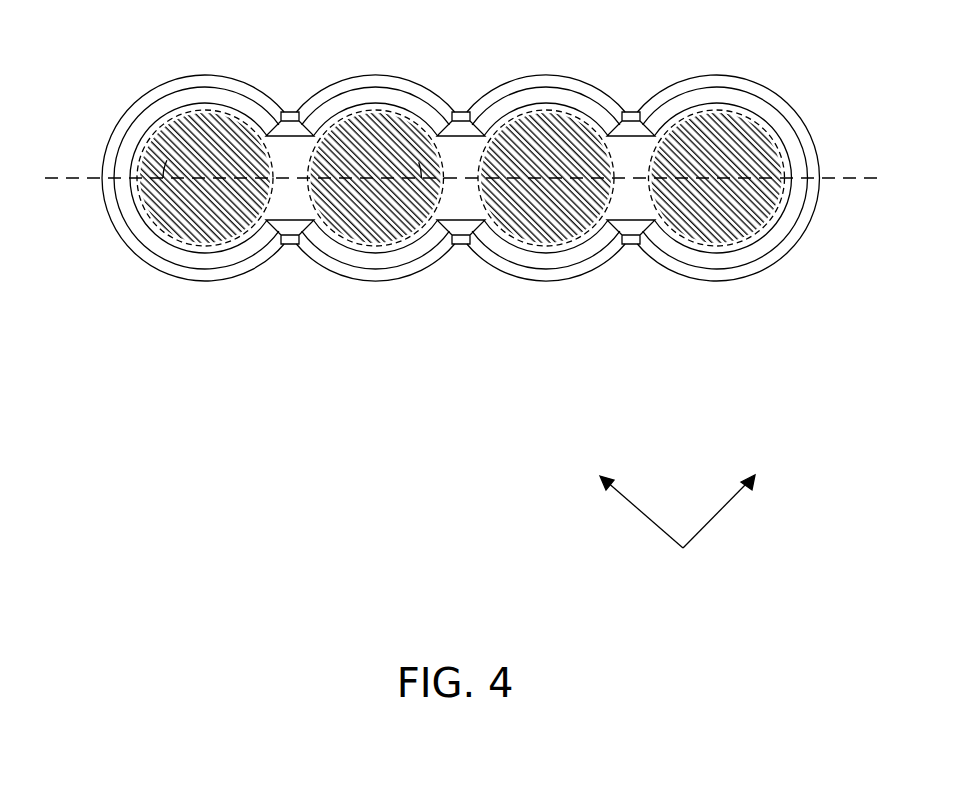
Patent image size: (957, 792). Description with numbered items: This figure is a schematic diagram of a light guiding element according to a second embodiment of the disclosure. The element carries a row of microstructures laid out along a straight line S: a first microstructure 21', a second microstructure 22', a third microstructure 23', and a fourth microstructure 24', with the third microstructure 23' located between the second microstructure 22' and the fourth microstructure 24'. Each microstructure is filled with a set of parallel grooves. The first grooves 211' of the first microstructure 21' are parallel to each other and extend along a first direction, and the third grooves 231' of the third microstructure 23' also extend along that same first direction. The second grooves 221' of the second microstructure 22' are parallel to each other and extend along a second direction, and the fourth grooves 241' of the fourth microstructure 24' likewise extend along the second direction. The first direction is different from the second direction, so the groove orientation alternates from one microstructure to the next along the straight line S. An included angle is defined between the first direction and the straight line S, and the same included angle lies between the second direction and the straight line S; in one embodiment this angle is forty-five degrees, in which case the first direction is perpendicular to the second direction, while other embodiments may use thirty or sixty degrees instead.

The first microstructure 21' is at (187, 223).
The first grooves 211' is at (205, 230).
The second microstructure 22' is at (357, 223).
The second grooves 221' is at (376, 230).
The third microstructure 23' is at (527, 223).
The third grooves 231' is at (546, 230).
The fourth microstructure 24' is at (709, 223).
The fourth grooves 241' is at (717, 230).
The straight line S is at (874, 184).